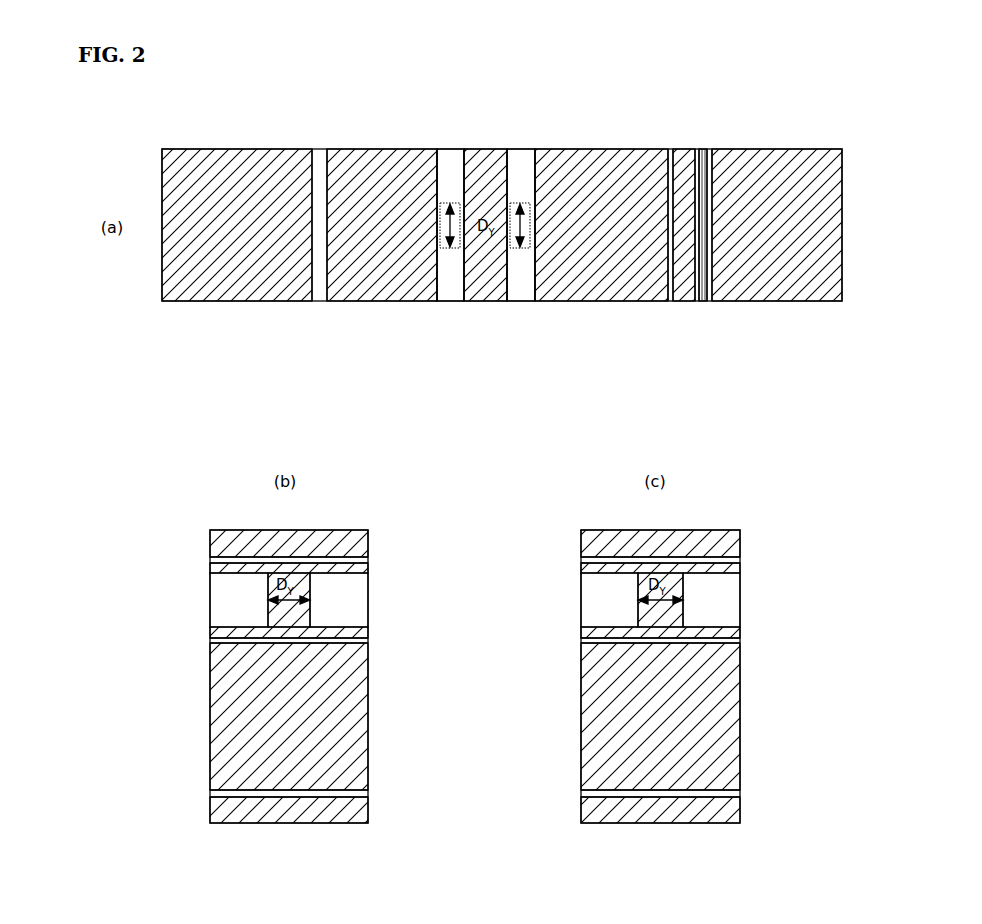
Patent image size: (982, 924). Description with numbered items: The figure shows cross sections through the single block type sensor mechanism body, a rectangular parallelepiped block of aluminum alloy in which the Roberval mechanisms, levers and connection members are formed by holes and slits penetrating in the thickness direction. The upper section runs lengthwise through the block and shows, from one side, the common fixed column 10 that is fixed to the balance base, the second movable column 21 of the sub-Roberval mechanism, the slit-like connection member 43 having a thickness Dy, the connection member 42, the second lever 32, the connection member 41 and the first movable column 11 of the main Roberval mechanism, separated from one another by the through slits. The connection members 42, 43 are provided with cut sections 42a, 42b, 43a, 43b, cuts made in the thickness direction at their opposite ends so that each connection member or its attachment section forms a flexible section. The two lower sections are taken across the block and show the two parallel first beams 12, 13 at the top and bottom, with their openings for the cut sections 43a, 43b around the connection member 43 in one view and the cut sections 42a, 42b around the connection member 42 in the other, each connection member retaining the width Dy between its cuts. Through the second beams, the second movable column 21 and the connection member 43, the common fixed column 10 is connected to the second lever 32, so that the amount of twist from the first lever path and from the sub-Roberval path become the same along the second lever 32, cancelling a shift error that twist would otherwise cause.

The common fixed column 10 is at (234, 190).
The second movable column 21 is at (378, 190).
The second lever 32 is at (600, 190).
The connection member 41 is at (705, 190).
The first movable column 11 is at (767, 190).
The connection member 43 is at (448, 192).
The cut section 43a is at (452, 287).
The cut section 43b is at (457, 175).
The connection member 42 is at (518, 192).
The cut section 42a is at (524, 290).
The cut section 42b is at (528, 175).
The first beam 13 is at (590, 550).
The first beam 12 is at (592, 818).